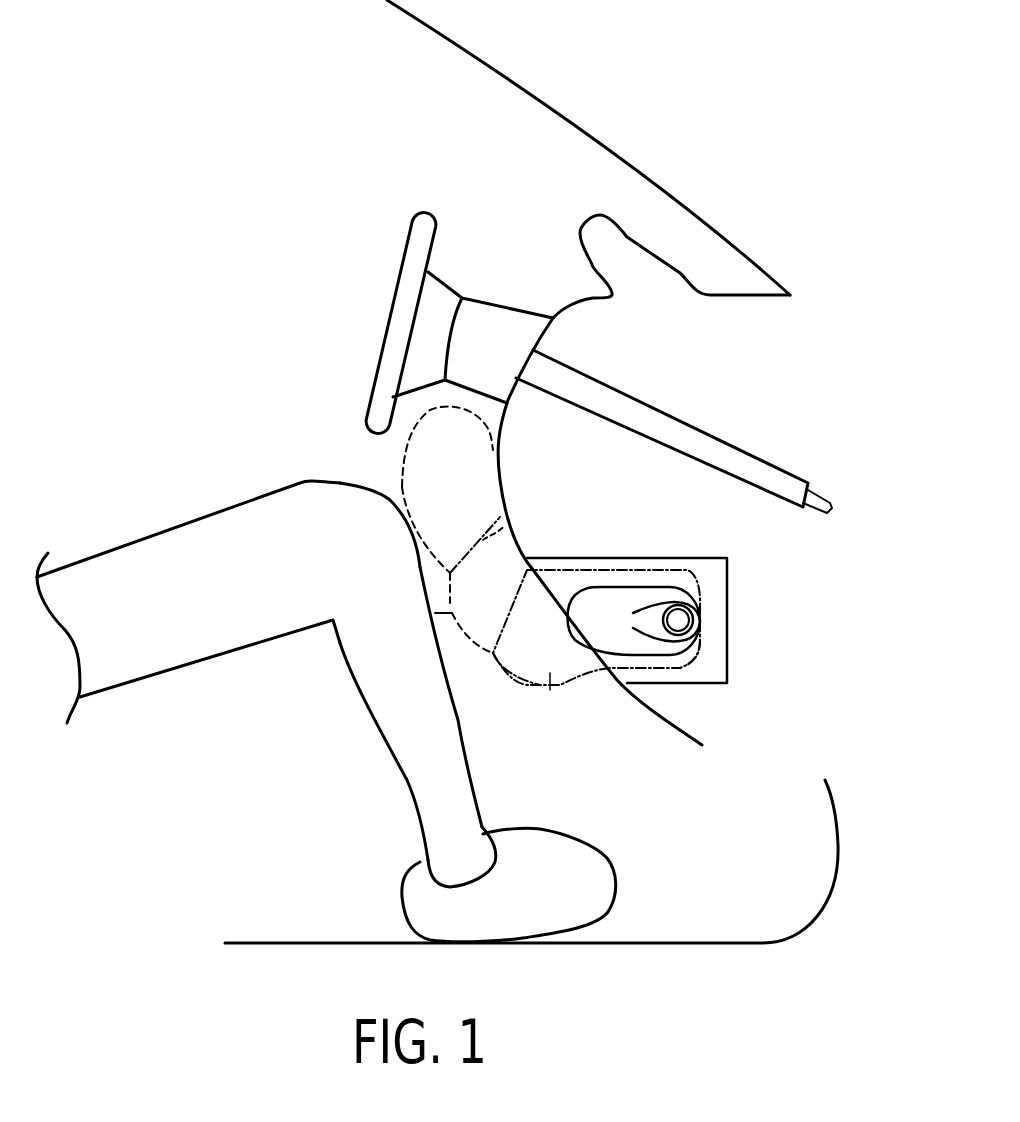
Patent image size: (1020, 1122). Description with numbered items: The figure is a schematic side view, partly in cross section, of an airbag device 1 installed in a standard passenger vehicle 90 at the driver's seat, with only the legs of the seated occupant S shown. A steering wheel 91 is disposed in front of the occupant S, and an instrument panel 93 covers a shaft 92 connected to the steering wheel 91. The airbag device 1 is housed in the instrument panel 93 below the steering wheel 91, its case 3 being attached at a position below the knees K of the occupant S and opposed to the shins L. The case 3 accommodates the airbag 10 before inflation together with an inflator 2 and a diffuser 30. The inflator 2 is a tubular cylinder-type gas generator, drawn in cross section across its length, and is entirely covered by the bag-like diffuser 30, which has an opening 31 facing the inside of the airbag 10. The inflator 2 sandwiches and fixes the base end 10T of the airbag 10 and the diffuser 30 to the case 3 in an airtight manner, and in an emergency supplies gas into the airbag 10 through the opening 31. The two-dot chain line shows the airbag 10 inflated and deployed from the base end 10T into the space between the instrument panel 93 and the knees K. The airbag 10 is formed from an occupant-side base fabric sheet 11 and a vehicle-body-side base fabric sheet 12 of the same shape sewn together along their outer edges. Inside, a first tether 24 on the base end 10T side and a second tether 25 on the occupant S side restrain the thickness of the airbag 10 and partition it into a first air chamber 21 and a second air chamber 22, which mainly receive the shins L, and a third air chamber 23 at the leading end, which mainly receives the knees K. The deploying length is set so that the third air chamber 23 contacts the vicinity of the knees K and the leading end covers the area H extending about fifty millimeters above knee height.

The airbag device 1 is at (657, 631).
The inflator 2 is at (683, 620).
The case 3 is at (727, 570).
The airbag 10 is at (643, 647).
The base end 10T is at (705, 647).
The occupant-side base fabric sheet 11 is at (450, 617).
The vehicle-body-side base fabric sheet 12 is at (492, 492).
The first air chamber 21 is at (550, 675).
The second air chamber 22 is at (467, 595).
The third air chamber 23 is at (470, 458).
The first tether 24 is at (497, 635).
The second tether 25 is at (483, 540).
The diffuser 30 is at (660, 600).
The opening 31 is at (633, 617).
The vehicle 90 is at (690, 195).
The steering wheel 91 is at (403, 265).
The shaft 92 is at (742, 451).
The instrument panel 93 is at (658, 712).
The occupant S is at (125, 539).
The knees K is at (390, 497).
The shins L is at (450, 670).
The area H is at (395, 511).